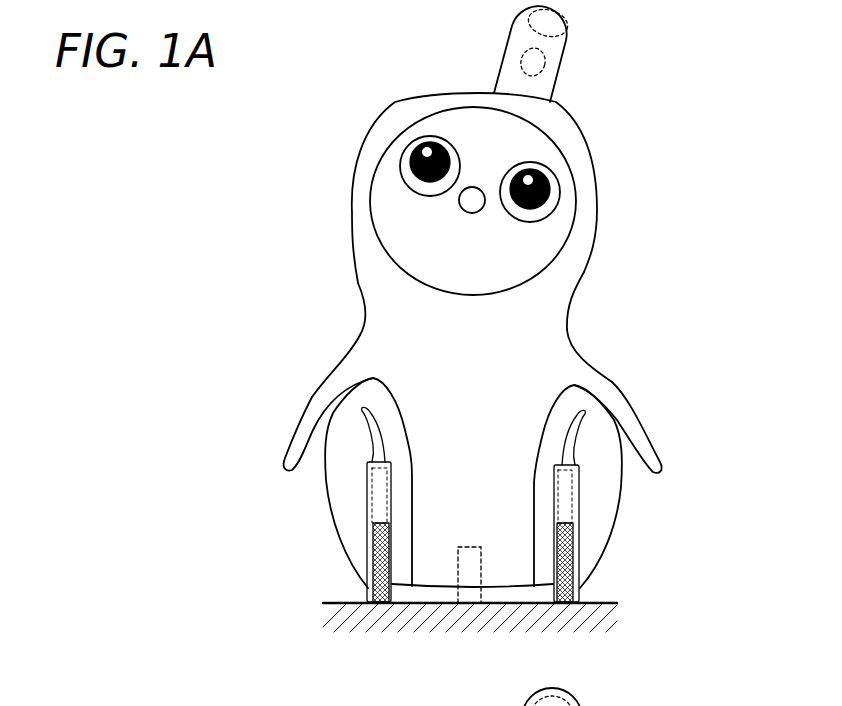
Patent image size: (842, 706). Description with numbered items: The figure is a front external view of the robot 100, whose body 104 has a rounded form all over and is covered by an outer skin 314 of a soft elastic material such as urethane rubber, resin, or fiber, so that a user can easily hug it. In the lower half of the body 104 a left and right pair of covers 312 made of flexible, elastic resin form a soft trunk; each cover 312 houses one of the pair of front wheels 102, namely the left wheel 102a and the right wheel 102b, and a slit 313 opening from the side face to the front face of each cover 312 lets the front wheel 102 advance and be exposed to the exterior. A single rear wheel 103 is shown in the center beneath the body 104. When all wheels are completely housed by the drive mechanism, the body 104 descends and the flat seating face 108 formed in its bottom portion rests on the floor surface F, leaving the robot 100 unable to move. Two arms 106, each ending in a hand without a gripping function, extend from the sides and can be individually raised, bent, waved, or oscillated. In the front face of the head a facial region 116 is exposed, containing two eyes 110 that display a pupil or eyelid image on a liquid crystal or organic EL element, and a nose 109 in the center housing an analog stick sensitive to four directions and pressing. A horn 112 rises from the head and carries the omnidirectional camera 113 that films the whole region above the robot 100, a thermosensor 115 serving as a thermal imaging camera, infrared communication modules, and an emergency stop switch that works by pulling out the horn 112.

The robot 100 is at (663, 104).
The front wheels 102 is at (475, 532).
The left wheel 102a is at (580, 585).
The right wheel 102b is at (372, 584).
The rear wheel 103 is at (467, 598).
The body 104 is at (578, 358).
The arm 106 is at (638, 405).
The seating face 108 is at (435, 588).
The nose 109 is at (459, 203).
The eye 110 is at (562, 192).
The horn 112 is at (558, 68).
The omnidirectional camera 113 is at (570, 28).
The thermosensor 115 is at (520, 60).
The facial region 116 is at (383, 248).
The cover 312 is at (330, 480).
The slit 313 is at (380, 440).
The outer skin 314 is at (569, 318).
The floor surface F is at (527, 595).